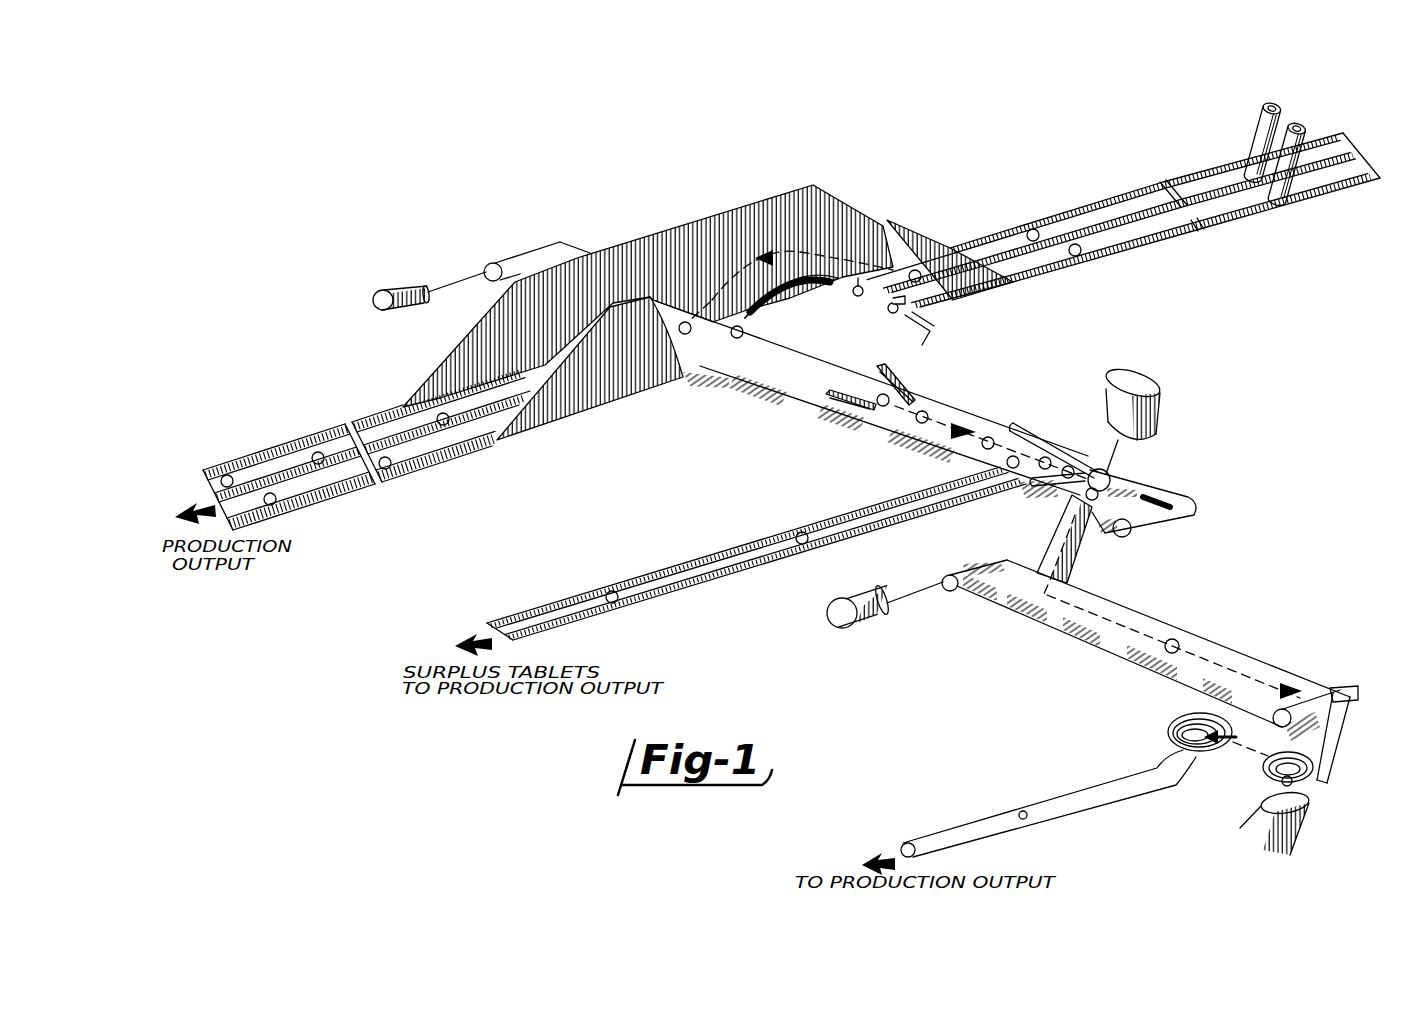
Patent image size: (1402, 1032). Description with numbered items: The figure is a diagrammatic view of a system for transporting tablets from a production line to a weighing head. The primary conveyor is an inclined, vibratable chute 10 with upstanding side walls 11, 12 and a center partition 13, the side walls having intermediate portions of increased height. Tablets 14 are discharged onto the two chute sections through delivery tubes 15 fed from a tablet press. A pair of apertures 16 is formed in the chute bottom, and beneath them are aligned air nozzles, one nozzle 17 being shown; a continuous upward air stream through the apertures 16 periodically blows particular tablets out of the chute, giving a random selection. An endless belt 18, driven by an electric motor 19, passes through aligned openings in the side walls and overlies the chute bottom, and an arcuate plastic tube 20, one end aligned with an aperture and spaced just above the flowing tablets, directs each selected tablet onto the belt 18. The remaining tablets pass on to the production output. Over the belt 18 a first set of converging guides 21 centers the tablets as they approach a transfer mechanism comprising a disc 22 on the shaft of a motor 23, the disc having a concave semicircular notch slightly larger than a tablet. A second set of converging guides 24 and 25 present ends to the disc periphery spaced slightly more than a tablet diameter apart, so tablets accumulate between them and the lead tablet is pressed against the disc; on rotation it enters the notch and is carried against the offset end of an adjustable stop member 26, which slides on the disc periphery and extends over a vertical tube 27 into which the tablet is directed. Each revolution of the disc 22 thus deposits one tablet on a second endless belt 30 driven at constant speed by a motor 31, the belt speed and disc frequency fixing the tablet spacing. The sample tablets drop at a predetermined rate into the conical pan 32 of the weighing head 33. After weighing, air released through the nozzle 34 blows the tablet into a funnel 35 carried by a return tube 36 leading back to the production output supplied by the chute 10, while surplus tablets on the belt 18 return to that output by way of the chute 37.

The vibratable chute 10 is at (333, 412).
The side wall 11 is at (1193, 170).
The side wall 12 is at (1285, 203).
The center partition 13 is at (1103, 229).
The tablets 14 is at (1073, 245).
The delivery tubes 15 is at (1262, 123).
The apertures 16 is at (858, 280).
The air nozzle 17 is at (932, 329).
The endless belt 18 is at (527, 254).
The electric motor 19 is at (402, 290).
The arcuate tube 20 is at (757, 290).
The converging guides 21 is at (895, 385).
The disc 22 is at (1110, 473).
The motor 23 is at (1115, 380).
The converging guide 24 is at (1040, 497).
The converging guide 25 is at (1022, 425).
The adjustable stop member 26 is at (1110, 497).
The vertical tube 27 is at (1075, 562).
The second endless belt 30 is at (1015, 592).
The motor 31 is at (863, 597).
The conical pan 32 is at (1270, 765).
The weighing head 33 is at (1308, 826).
The nozzle 34 is at (1335, 785).
The funnel 35 is at (1170, 716).
The return tube 36 is at (1120, 782).
The chute 37 is at (765, 535).